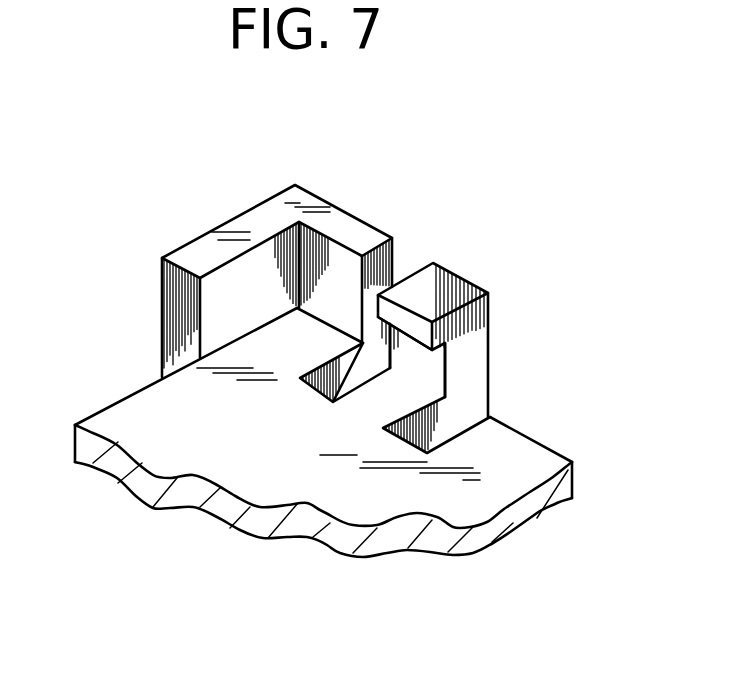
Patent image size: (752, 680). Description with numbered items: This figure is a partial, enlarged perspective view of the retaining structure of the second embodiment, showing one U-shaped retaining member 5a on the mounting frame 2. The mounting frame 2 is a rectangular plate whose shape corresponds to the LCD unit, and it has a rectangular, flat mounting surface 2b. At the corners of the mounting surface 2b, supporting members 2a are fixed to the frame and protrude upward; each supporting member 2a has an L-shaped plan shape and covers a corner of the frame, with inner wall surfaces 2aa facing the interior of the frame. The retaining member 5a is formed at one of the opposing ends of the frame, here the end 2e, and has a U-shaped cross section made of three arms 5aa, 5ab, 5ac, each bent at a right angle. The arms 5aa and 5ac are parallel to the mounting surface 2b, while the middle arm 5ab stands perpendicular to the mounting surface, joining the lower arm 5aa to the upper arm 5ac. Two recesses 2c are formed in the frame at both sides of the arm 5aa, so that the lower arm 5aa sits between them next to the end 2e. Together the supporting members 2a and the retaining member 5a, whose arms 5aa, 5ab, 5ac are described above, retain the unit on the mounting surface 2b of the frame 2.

The mounting frame 2 is at (354, 469).
The supporting member 2a is at (295, 245).
The inner wall surfaces of positioning projection 2aa is at (283, 257).
The mounting surface 2b is at (131, 426).
The recess 2c is at (338, 380).
The end of the frame 2e is at (540, 450).
The retaining member 5a is at (477, 306).
The arm 5aa is at (398, 410).
The arm 5ab is at (425, 360).
The arm 5ac is at (412, 327).